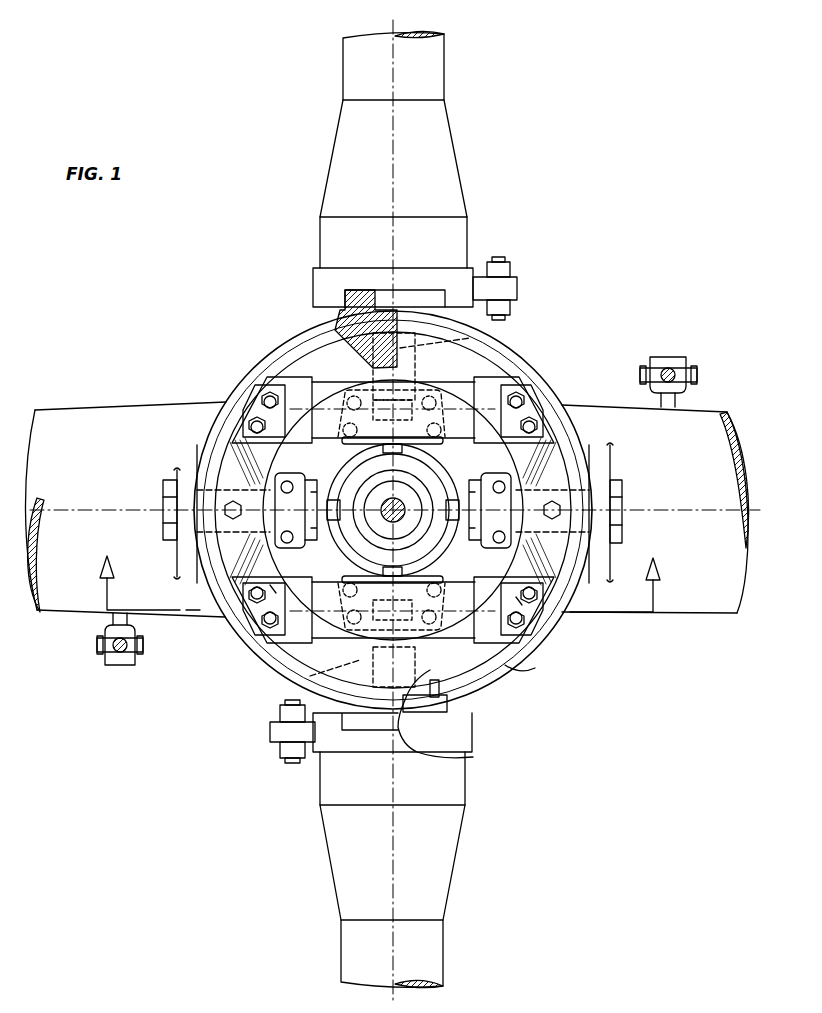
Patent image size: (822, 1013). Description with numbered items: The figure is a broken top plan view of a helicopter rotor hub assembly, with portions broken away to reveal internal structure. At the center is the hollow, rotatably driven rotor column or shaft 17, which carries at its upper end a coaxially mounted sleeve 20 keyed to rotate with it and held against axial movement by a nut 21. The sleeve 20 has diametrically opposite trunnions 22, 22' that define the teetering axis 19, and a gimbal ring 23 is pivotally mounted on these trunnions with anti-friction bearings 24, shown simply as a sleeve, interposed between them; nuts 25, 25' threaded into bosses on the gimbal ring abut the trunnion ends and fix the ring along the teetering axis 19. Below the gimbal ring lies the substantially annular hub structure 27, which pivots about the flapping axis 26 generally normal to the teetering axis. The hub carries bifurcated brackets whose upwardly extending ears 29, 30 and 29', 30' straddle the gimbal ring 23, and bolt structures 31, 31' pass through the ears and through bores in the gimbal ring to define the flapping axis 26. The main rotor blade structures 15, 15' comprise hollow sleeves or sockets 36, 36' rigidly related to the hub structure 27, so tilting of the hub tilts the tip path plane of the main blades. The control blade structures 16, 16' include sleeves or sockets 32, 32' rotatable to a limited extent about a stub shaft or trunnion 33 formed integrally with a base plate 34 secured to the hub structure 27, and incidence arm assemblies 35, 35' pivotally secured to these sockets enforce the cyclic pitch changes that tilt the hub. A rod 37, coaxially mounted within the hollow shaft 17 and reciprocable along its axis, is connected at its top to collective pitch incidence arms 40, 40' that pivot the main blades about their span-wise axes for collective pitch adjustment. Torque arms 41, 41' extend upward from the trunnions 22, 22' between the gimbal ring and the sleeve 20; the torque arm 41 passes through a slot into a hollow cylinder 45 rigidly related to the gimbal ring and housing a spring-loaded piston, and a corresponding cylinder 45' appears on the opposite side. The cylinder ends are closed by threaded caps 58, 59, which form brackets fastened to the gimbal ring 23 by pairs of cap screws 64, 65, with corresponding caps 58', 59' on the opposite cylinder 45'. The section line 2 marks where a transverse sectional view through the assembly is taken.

The main rotor blade structure 15 is at (655, 489).
The main rotor blade structure 15' is at (125, 492).
The control blade structure 16 is at (415, 836).
The control blade structure 16' is at (426, 184).
The rotor column or shaft 17 is at (366, 484).
The teetering axis 19 is at (393, 178).
The sleeve 20 is at (440, 545).
The nut 21 is at (362, 530).
The trunnion 22 is at (304, 682).
The trunnion 22' is at (470, 331).
The gimbal ring 23 is at (503, 690).
The anti-friction bearing 24 is at (366, 345).
The nut 25 is at (416, 744).
The nut 25' is at (374, 287).
The flapping axis 26 is at (88, 506).
The hub structure 27 is at (495, 466).
The ear 29 is at (625, 513).
The ear 29' is at (176, 495).
The ear 30 is at (501, 518).
The ear 30' is at (247, 536).
The bolt structure 31 is at (599, 510).
The bolt structure 31' is at (184, 518).
The sleeve or socket 32 is at (415, 954).
The sleeve or socket 32' is at (415, 65).
The stub shaft or trunnion 33 is at (430, 712).
The base plate 34 is at (445, 690).
The incidence arm assembly 35 is at (272, 734).
The incidence arm assembly 35' is at (514, 285).
The hollow sleeve or socket 36 is at (723, 527).
The hollow sleeve or socket 36' is at (46, 573).
The rod 37 is at (398, 505).
The collective pitch incidence arm 40 is at (676, 361).
The collective pitch incidence arm 40' is at (111, 653).
The torque arm 41 is at (419, 665).
The torque arm 41' is at (418, 366).
The hollow sleeve or cylinder 45 is at (393, 510).
The ring 45' is at (393, 510).
The cap 58 is at (263, 622).
The bearing block 58' is at (262, 402).
The cap 59 is at (516, 638).
The bearing block 59' is at (522, 392).
The cap screws 64 is at (276, 592).
The cap screws 65 is at (522, 604).
The section line 2 is at (373, 577).